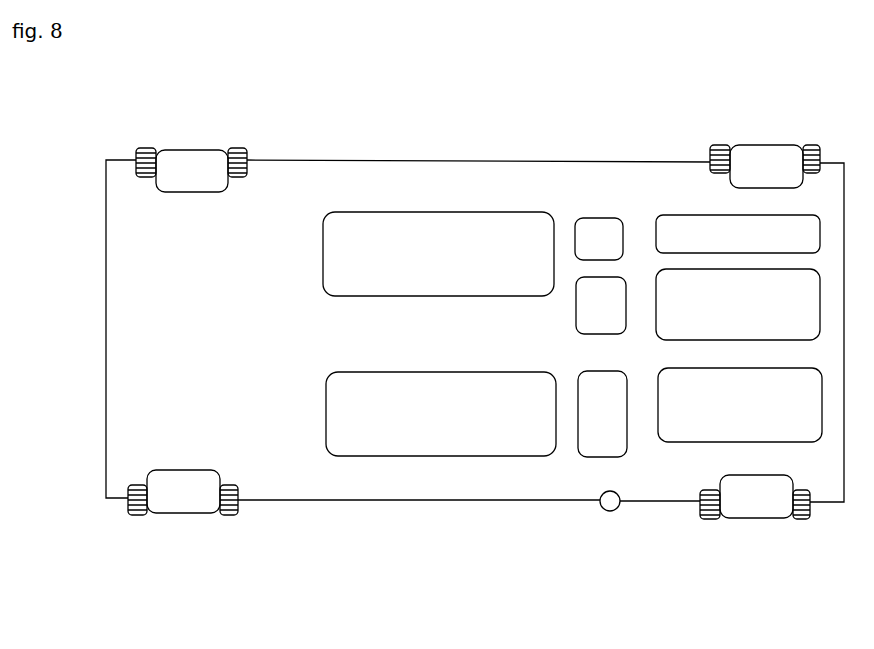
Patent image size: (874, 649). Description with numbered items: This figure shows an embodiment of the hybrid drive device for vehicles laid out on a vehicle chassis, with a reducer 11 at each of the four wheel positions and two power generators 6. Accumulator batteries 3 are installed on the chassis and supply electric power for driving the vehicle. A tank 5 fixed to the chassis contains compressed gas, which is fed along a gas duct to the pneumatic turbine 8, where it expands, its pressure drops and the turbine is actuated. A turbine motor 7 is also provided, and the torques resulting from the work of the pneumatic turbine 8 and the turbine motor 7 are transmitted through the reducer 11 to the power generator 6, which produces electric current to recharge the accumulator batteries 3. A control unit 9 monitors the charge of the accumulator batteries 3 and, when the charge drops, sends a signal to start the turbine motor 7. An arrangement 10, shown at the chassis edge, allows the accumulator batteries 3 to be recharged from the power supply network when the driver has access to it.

The accumulator batteries 3 is at (439, 334).
The tank 5 is at (740, 405).
The power generator 6 is at (600, 276).
The turbine motor 7 is at (738, 234).
The pneumatic turbine 8 is at (738, 304).
The control unit 9 is at (602, 414).
The arrangement 10 is at (613, 507).
The reducer 11 is at (474, 332).